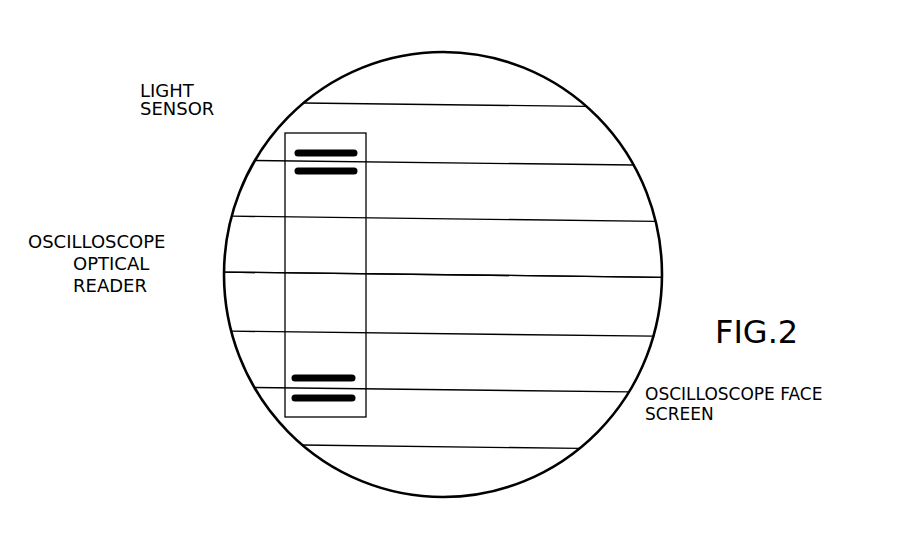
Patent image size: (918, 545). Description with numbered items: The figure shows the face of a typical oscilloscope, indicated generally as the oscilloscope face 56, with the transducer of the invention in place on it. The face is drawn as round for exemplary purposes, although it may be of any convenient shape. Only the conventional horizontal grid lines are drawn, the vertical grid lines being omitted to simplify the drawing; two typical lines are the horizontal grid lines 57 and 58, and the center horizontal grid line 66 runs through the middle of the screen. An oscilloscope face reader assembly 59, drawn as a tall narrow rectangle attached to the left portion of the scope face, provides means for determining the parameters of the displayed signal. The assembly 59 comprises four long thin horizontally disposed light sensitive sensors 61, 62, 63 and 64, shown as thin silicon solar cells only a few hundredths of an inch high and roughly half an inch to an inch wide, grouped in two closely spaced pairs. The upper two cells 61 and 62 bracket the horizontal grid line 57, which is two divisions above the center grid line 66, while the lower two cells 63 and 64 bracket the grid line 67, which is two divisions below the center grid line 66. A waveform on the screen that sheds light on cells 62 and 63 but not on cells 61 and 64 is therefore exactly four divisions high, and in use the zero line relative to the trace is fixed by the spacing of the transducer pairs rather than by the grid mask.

The oscilloscope face 56 is at (634, 139).
The horizontal grid line 57 is at (622, 166).
The horizontal grid line 58 is at (636, 223).
The oscilloscope face reader assembly 59 is at (283, 256).
The light sensitive sensor 61 is at (305, 149).
The light sensitive sensor 62 is at (305, 176).
The light sensitive sensor 63 is at (296, 373).
The light sensitive sensor 64 is at (300, 403).
The center horizontal grid line 66 is at (563, 278).
The horizontal grid line 67 is at (476, 390).